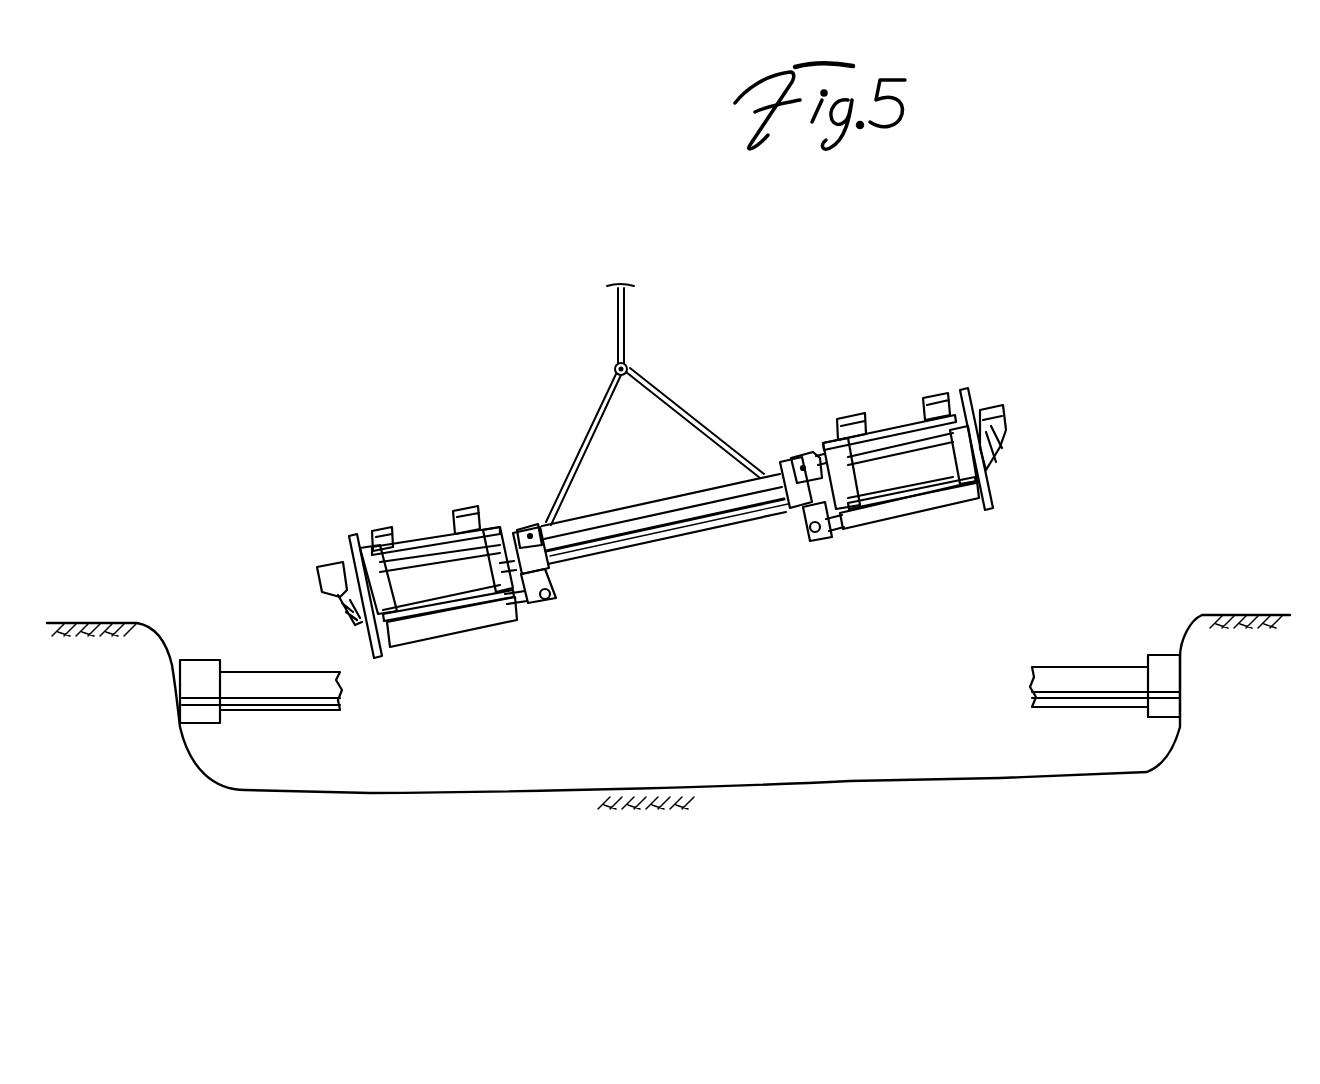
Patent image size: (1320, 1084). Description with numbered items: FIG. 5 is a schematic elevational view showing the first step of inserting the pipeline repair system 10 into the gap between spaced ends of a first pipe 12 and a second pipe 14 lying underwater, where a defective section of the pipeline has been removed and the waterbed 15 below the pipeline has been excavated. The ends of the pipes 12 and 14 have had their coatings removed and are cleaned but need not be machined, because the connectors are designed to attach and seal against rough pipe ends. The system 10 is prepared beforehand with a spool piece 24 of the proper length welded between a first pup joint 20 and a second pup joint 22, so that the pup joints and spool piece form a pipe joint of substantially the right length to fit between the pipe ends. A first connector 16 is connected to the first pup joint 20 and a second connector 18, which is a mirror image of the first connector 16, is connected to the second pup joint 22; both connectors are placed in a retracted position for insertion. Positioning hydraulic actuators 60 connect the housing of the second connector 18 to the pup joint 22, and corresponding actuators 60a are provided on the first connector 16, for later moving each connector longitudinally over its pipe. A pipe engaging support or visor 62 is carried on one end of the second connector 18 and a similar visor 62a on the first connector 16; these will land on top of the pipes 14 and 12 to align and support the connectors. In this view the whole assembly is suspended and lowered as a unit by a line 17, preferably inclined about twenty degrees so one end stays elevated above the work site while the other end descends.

The pipeline repair system 10 is at (635, 489).
The first pipe 12 is at (268, 670).
The second pipe 14 is at (1125, 666).
The waterbed 15 is at (762, 790).
The first connector 16 is at (430, 528).
The line 17 is at (614, 373).
The second connector 18 is at (886, 416).
The first pup joint 20 is at (545, 548).
The second pup joint 22 is at (790, 470).
The spool piece 24 is at (690, 490).
The positioning hydraulic actuators 60 is at (898, 519).
The positioning hydraulic actuators 60a is at (428, 628).
The pipe engaging support or visor 62 is at (1001, 408).
The pipe engaging support or visor 62a is at (332, 563).